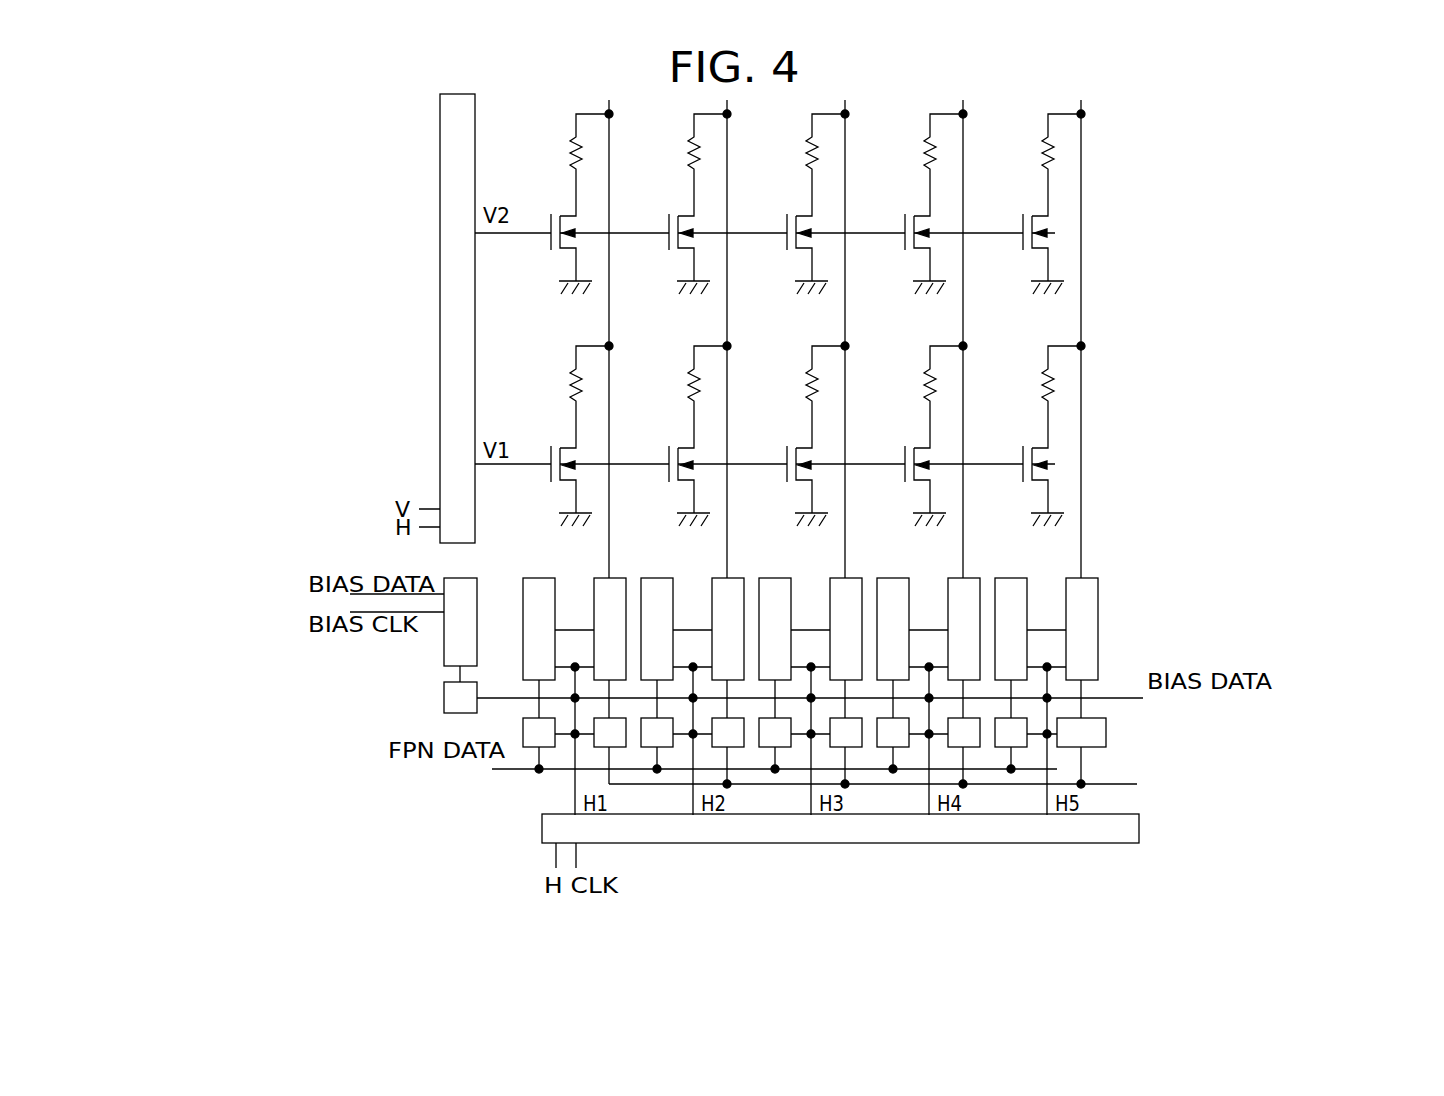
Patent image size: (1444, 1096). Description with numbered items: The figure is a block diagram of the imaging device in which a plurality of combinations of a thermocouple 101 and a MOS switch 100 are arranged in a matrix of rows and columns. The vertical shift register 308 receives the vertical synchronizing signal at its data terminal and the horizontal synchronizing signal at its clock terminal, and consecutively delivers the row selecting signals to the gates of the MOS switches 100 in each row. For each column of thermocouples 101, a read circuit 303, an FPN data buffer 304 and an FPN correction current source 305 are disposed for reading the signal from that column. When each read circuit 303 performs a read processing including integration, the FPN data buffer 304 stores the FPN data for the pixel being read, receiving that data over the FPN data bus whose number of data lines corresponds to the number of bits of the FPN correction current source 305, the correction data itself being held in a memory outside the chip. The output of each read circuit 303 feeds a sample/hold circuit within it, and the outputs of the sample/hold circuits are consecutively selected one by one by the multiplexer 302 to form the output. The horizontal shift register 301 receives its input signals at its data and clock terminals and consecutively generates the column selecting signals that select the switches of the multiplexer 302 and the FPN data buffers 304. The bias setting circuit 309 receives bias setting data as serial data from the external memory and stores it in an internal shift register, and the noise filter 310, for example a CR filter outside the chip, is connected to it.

The MOS switch 100 is at (549, 451).
The thermocouple 101 is at (563, 388).
The horizontal shift register 301 is at (1139, 830).
The multiplexer 302 is at (1106, 734).
The read circuit 303 is at (1098, 608).
The FPN data buffer 304 is at (1017, 717).
The FPN correction current source 305 is at (1027, 583).
The vertical shift register 308 is at (440, 213).
The bias setting circuit 309 is at (444, 652).
The noise filter 310 is at (444, 700).